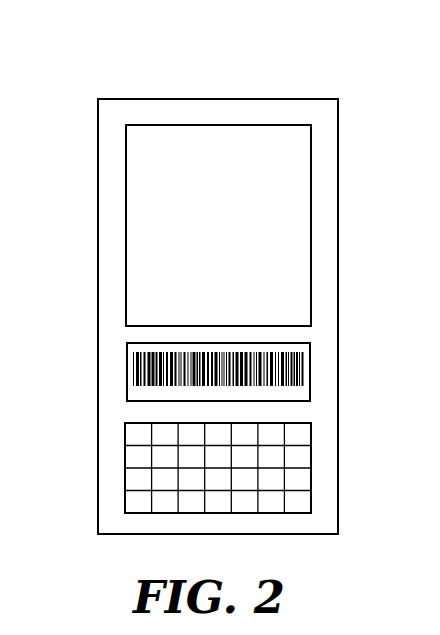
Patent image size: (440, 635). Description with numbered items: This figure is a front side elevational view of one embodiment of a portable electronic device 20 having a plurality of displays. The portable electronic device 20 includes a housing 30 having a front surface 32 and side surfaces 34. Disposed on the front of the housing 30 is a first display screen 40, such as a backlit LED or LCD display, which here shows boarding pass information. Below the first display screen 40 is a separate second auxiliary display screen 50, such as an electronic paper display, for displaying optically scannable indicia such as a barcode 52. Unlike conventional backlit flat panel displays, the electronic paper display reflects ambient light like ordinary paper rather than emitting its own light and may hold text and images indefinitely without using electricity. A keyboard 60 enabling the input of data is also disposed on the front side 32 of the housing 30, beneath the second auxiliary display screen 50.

The portable electronic device 20 is at (88, 70).
The housing 30 is at (88, 207).
The front surface 32 is at (105, 284).
The side surfaces 34 is at (97, 441).
The first display screen 40 is at (140, 150).
The second auxiliary display screen 50 is at (133, 395).
The barcode 52 is at (133, 363).
The keyboard 60 is at (134, 480).